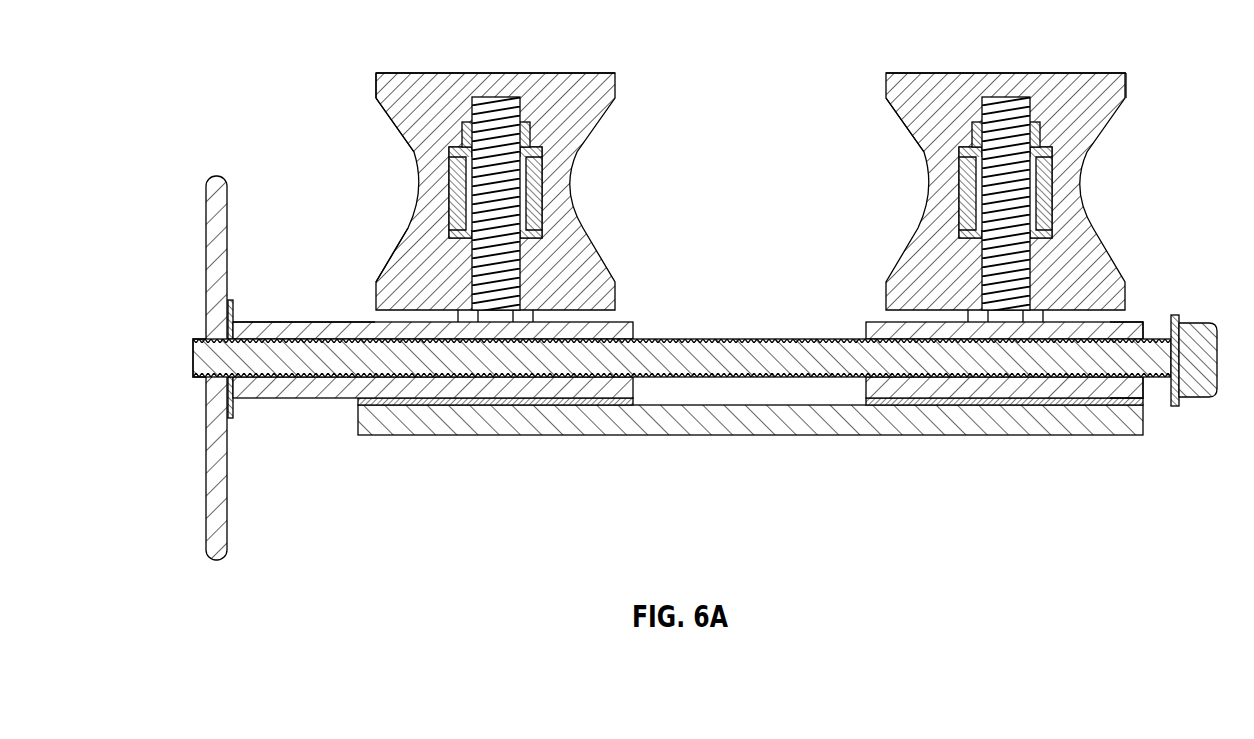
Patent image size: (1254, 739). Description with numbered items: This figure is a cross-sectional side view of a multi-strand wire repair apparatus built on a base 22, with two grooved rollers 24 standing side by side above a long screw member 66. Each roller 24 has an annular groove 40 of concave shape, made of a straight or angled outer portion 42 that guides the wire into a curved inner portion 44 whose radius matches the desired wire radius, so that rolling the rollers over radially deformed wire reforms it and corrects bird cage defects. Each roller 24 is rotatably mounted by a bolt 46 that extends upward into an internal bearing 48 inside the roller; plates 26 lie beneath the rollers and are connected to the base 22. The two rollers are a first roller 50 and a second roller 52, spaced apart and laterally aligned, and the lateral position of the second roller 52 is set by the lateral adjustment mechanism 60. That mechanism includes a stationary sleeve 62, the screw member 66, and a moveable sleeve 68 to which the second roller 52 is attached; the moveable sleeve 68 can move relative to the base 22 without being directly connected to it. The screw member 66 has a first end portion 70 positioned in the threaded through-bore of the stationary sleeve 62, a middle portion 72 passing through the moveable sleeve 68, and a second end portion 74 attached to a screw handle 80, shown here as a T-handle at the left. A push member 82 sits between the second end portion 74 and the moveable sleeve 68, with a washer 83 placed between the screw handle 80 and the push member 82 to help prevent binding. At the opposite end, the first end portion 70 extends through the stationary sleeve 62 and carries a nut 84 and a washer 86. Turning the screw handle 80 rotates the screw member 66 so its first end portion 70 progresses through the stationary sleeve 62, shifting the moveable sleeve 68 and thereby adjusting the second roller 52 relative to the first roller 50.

The base 22 is at (407, 437).
The rollers 24 is at (446, 72).
The plates 26 is at (563, 400).
The annular groove 40 is at (388, 267).
The outer portion 42 is at (387, 123).
The inner portion 44 is at (417, 230).
The bolt 46 is at (488, 93).
The internal bearing 48 is at (447, 200).
The first roller 50 is at (1127, 85).
The second roller 52 is at (372, 87).
The lateral adjustment mechanism 60 is at (205, 378).
The stationary sleeve 62 is at (1128, 323).
The screw member 66 is at (347, 385).
The moveable sleeve 68 is at (370, 322).
The first end portion 70 is at (1145, 380).
The middle portion 72 is at (293, 335).
The second end portion 74 is at (203, 338).
The screw handle 80 is at (228, 210).
The push member 82 is at (297, 398).
The washer 83 is at (232, 300).
The nut 84 is at (1200, 397).
The washer 86 is at (1175, 407).